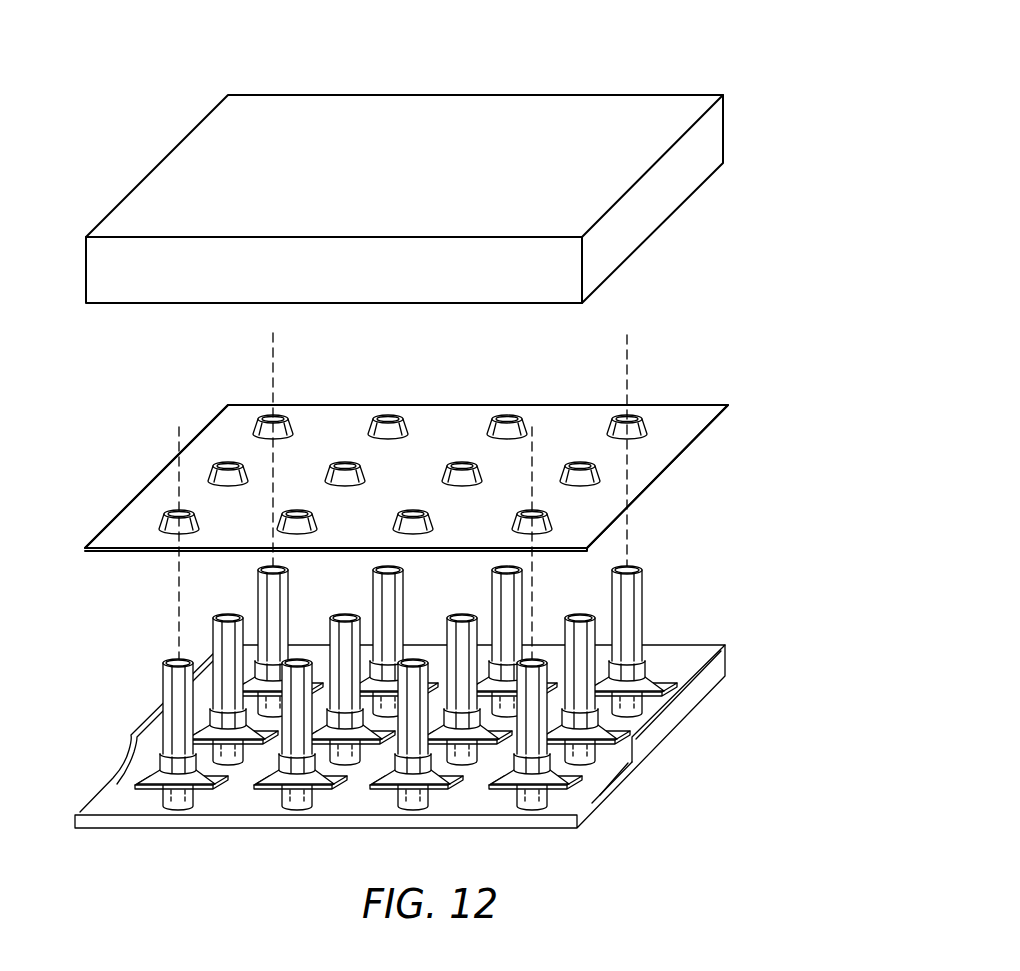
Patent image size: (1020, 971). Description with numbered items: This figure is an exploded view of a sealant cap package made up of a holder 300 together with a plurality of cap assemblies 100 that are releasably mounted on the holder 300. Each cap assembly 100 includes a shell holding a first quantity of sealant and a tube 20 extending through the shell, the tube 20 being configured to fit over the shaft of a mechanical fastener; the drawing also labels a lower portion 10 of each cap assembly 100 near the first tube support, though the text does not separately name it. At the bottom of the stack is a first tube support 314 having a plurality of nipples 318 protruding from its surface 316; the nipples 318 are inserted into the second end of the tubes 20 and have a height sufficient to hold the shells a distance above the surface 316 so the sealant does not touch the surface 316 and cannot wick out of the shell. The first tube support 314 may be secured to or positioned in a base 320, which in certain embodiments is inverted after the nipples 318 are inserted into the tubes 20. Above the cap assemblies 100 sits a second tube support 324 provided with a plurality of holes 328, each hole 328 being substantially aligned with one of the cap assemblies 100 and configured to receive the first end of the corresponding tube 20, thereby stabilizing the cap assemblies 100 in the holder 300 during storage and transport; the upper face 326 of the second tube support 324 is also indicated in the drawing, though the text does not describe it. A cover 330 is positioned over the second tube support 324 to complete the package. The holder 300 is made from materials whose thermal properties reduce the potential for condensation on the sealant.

The holder 300 is at (697, 321).
The cover 330 is at (553, 127).
The second tube support 324 is at (653, 465).
The plate surface 326 is at (682, 434).
The hole 328 is at (632, 418).
The first tube support 314 is at (578, 807).
The surface 316 is at (588, 788).
The nipple 318 is at (580, 797).
The base 320 is at (435, 715).
The post base 10 is at (693, 647).
The cap assembly 100 is at (447, 683).
The tube 20 is at (635, 612).